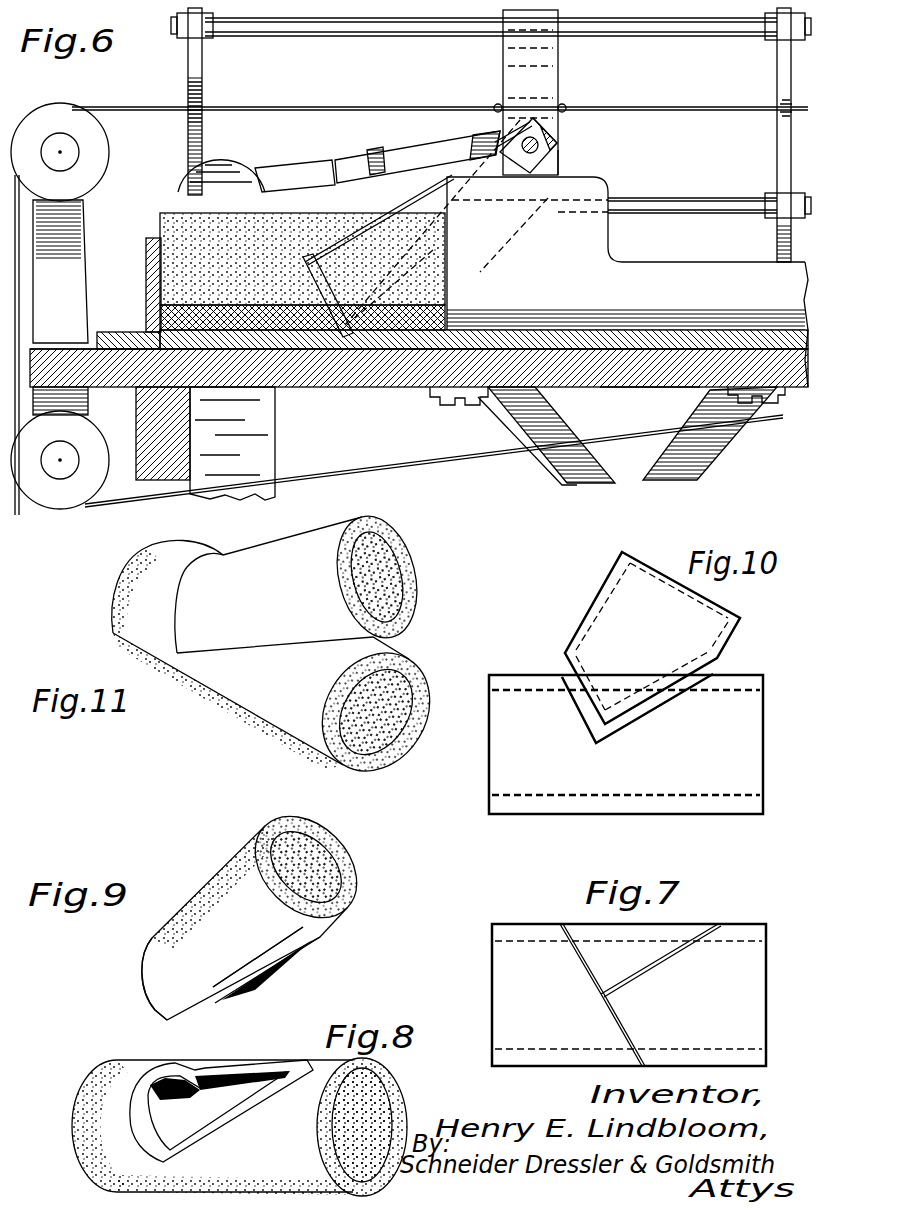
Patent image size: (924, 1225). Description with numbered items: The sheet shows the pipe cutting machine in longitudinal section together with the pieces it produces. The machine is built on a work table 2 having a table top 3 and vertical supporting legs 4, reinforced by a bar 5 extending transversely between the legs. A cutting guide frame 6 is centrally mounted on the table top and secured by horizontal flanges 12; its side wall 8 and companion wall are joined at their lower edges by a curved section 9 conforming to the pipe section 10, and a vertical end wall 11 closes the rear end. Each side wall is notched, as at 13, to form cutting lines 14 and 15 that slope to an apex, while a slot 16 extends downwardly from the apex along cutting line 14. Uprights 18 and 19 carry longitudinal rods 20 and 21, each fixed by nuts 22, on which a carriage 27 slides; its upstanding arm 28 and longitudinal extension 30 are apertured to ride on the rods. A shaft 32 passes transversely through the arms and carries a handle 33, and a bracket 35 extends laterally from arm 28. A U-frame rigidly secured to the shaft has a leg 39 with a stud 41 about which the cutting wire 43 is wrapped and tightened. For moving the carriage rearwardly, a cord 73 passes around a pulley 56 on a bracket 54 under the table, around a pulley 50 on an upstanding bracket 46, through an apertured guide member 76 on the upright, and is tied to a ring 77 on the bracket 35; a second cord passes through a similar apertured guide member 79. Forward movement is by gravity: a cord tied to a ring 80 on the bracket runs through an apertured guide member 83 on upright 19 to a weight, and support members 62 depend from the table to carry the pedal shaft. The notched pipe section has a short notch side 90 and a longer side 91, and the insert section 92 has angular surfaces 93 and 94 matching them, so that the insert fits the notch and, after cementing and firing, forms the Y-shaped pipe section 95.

In FIG. 6, the work table 2 is at (661, 393).
In FIG. 6, the table top 3 is at (395, 378).
In FIG. 6, the vertical supporting legs 4 is at (275, 460).
In FIG. 6, the bar 5 is at (190, 460).
In FIG. 6, the cutting guide frame 6 is at (312, 356).
In FIG. 6, the side wall 8 is at (567, 320).
In FIG. 6, the curved section 9 is at (226, 340).
In FIG. 6, the pipe section 10 is at (167, 193).
In FIG. 6, the vertical end wall 11 is at (146, 268).
In FIG. 6, the horizontal flanges 12 is at (110, 332).
In FIG. 6, the notch 13 is at (320, 261).
In FIG. 6, the cutting line 14 is at (290, 232).
In FIG. 7, the cutting line 14 is at (577, 958).
In FIG. 6, the cutting line 15 is at (352, 238).
In FIG. 7, the cutting line 15 is at (647, 967).
In FIG. 6, the slot 16 is at (305, 296).
In FIG. 7, the slot 16 is at (608, 1013).
In FIG. 6, the upright 18 is at (203, 62).
In FIG. 6, the upright 19 is at (777, 70).
In FIG. 6, the longitudinal rod 20 is at (662, 30).
In FIG. 6, the longitudinal rod 21 is at (695, 198).
In FIG. 6, the nuts 22 is at (180, 38).
In FIG. 6, the carriage 27 is at (568, 163).
In FIG. 6, the upstanding arm 28 is at (558, 82).
In FIG. 6, the longitudinal extension 30 is at (538, 222).
In FIG. 6, the shaft 32 is at (560, 149).
In FIG. 6, the handle 33 is at (405, 156).
In FIG. 6, the bracket 35 is at (492, 138).
In FIG. 6, the leg 39 is at (475, 244).
In FIG. 6, the stud 41 is at (425, 222).
In FIG. 6, the cutting wire 43 is at (380, 280).
In FIG. 6, the upstanding bracket 46 is at (88, 226).
In FIG. 6, the pulley 50 is at (100, 149).
In FIG. 6, the bracket 54 is at (88, 405).
In FIG. 6, the pulley 56 is at (48, 500).
In FIG. 6, the support members 62 is at (612, 478).
In FIG. 6, the cord 73 is at (326, 105).
In FIG. 6, the apertured guide member 76 is at (190, 108).
In FIG. 6, the ring 77 is at (495, 104).
In FIG. 6, the apertured guide member 79 is at (558, 132).
In FIG. 6, the ring 80 is at (568, 107).
In FIG. 6, the apertured guide member 83 is at (780, 108).
In FIG. 10, the notch side 90 is at (585, 718).
In FIG. 8, the notch side 90 is at (170, 1063).
In FIG. 10, the notch side 91 is at (637, 716).
In FIG. 8, the notch side 91 is at (240, 1067).
In FIG. 10, the insert section 92 is at (600, 598).
In FIG. 9, the insert section 92 is at (221, 872).
In FIG. 10, the angular surface 93 is at (572, 673).
In FIG. 9, the angular surface 93 is at (145, 984).
In FIG. 10, the angular surface 94 is at (690, 697).
In FIG. 9, the angular surface 94 is at (300, 943).
In FIG. 11, the Y-shaped pipe section 95 is at (193, 700).